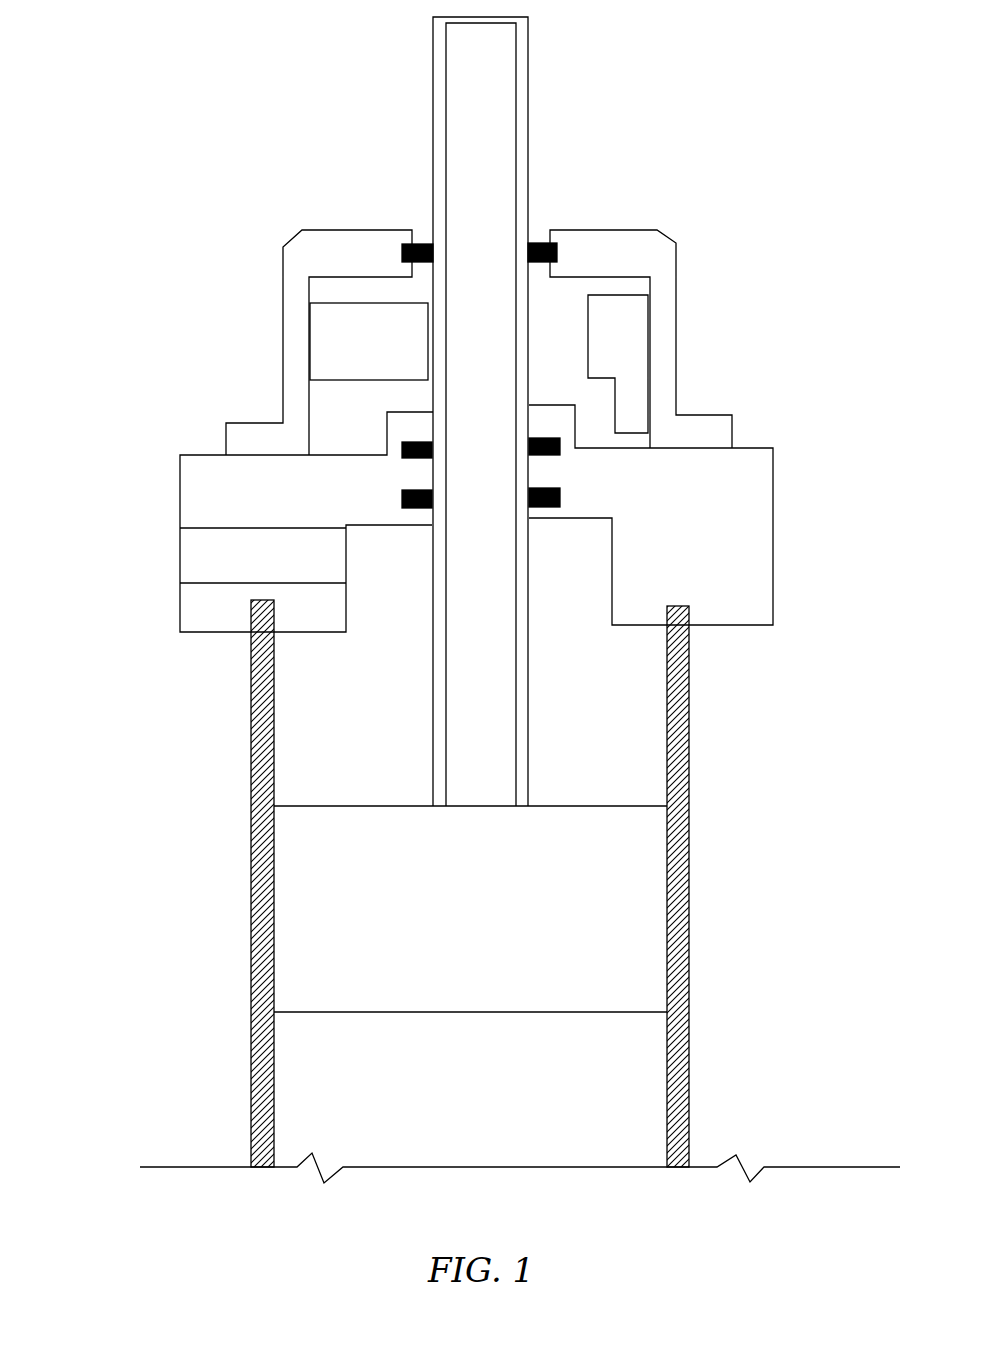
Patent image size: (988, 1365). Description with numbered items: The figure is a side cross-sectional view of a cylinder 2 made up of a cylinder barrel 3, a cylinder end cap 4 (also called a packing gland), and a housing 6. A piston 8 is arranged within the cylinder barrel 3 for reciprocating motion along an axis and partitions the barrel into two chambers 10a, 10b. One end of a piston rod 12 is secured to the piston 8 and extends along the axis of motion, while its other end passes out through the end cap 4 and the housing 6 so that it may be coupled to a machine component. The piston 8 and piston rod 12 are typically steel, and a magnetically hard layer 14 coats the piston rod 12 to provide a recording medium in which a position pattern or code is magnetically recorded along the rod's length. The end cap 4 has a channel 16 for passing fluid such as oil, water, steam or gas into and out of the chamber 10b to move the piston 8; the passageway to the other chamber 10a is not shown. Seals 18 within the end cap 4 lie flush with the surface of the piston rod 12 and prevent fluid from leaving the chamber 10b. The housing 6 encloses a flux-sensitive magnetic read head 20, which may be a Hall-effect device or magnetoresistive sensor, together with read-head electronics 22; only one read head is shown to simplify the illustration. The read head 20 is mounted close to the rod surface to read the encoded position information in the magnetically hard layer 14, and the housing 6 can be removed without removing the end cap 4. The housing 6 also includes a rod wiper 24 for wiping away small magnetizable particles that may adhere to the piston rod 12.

The cylinder 2 is at (86, 181).
The cylinder barrel 3 is at (250, 955).
The cylinder end cap 4 is at (249, 512).
The housing 6 is at (306, 251).
The piston 8 is at (484, 936).
The chamber 10a is at (375, 1114).
The chamber 10b is at (375, 724).
The piston rod 12 is at (497, 131).
The magnetically hard layer 14 is at (440, 80).
The channel 16 is at (200, 553).
The seals 18 is at (402, 490).
The read head 20 is at (384, 356).
The read-head electronics 22 is at (637, 354).
The rod wiper 24 is at (420, 243).